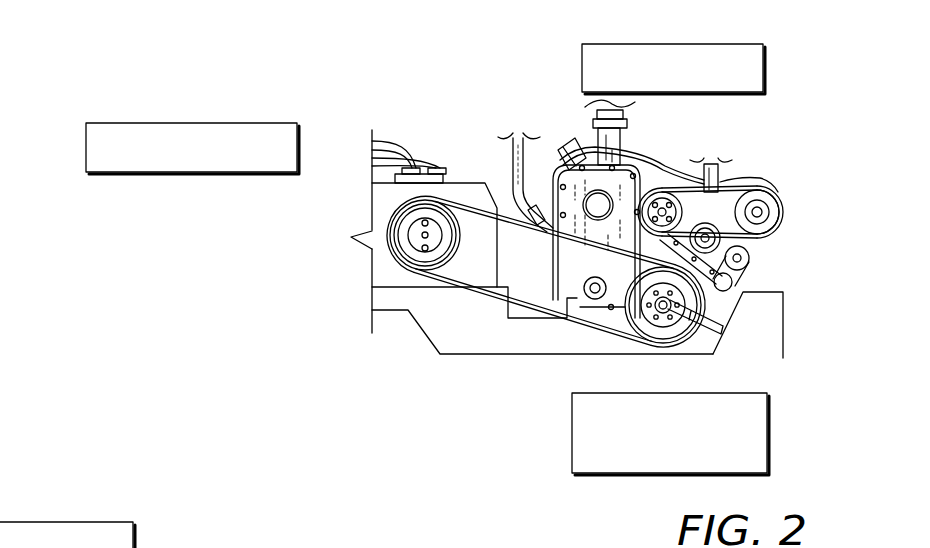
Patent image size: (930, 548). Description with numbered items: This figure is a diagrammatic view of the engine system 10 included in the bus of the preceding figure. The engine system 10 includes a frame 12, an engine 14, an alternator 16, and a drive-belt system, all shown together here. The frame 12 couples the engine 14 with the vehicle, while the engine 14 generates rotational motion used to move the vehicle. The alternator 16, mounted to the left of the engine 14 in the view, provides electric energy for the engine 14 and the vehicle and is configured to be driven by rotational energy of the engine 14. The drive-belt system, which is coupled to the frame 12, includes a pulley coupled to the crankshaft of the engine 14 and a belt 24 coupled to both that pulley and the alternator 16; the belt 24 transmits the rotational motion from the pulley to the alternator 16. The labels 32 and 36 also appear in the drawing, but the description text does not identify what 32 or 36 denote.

The engine system 10 is at (452, 132).
The frame 12 is at (766, 291).
The engine 14 is at (643, 152).
The alternator 16 is at (360, 168).
The belt 24 is at (499, 300).
The tension 32 is at (24, 522).
The controller 36 is at (363, 547).